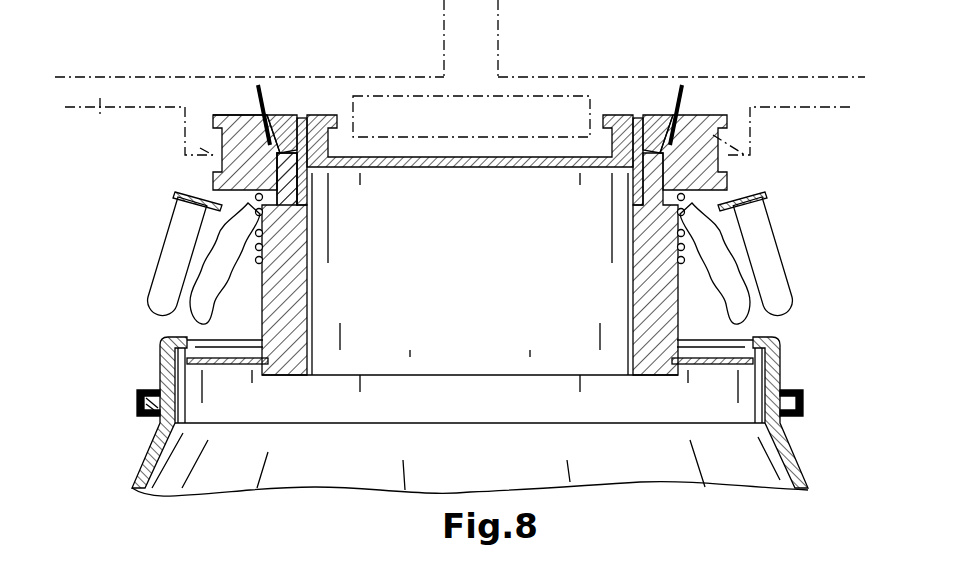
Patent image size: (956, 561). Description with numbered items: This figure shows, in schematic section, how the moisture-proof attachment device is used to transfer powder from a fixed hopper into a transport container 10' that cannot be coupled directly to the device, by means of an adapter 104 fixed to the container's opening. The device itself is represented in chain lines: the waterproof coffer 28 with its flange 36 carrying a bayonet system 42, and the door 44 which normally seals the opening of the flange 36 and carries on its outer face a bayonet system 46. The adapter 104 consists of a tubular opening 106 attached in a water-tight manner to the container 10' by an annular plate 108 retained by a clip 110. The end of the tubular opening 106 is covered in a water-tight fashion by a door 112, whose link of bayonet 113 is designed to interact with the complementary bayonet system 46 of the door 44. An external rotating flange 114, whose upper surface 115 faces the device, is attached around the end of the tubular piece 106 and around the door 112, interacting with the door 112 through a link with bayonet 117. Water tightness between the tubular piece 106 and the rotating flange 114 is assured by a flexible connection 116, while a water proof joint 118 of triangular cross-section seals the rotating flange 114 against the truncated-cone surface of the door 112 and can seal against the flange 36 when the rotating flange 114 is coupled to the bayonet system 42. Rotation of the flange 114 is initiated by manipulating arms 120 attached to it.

The transport container 10' is at (493, 416).
The waterproof coffer 28 is at (100, 115).
The flange 36 is at (719, 92).
The bayonet system 42 is at (213, 143).
The door 44 is at (535, 88).
The bayonet system 46 is at (352, 130).
The adapter 104 is at (777, 226).
The tubular opening 106 is at (287, 313).
The annular plate 108 is at (228, 366).
The clip 110 is at (143, 417).
The door 112 is at (522, 168).
The link of bayonet 113 is at (602, 114).
The external rotating flange 114 is at (215, 174).
The top surface 115 is at (220, 114).
The flexible connection 116 is at (752, 325).
The link with bayonet 117 is at (283, 165).
The water proof joint 118 is at (243, 114).
The manipulating arms 120 is at (152, 296).